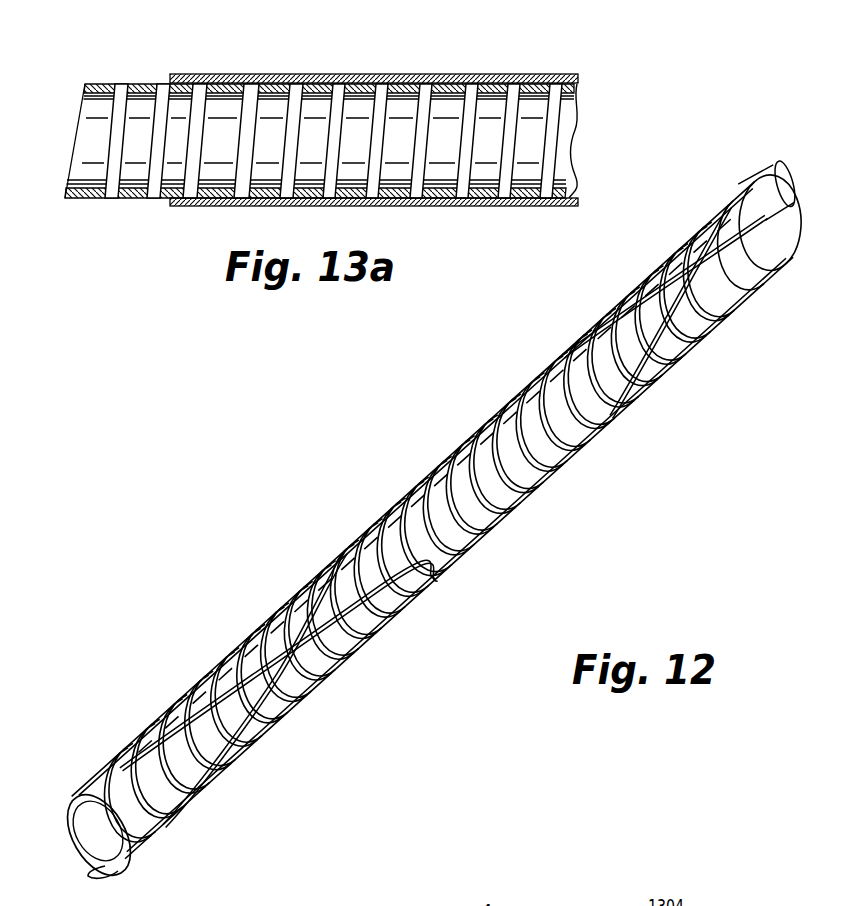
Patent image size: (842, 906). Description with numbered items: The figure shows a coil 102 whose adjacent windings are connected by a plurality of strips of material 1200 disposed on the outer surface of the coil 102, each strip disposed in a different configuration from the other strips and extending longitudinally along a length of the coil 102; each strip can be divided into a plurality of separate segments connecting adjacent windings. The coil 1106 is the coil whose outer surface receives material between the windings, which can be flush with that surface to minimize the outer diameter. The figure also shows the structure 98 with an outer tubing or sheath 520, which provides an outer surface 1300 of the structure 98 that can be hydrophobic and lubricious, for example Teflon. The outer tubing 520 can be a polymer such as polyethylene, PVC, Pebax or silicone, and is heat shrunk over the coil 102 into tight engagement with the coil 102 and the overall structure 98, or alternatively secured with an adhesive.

In FIG. 13A, the coil 102 is at (92, 120).
In FIG. 12, the coil 102 is at (178, 840).
In FIG. 13A, the outer tubing 520 is at (198, 73).
In FIG. 13A, the outer surface 1300 is at (319, 72).
In FIG. 13A, the structure 98 is at (497, 30).
In FIG. 12, the strips of material 1200 is at (190, 712).
In FIG. 12, the coil 1106 is at (238, 766).